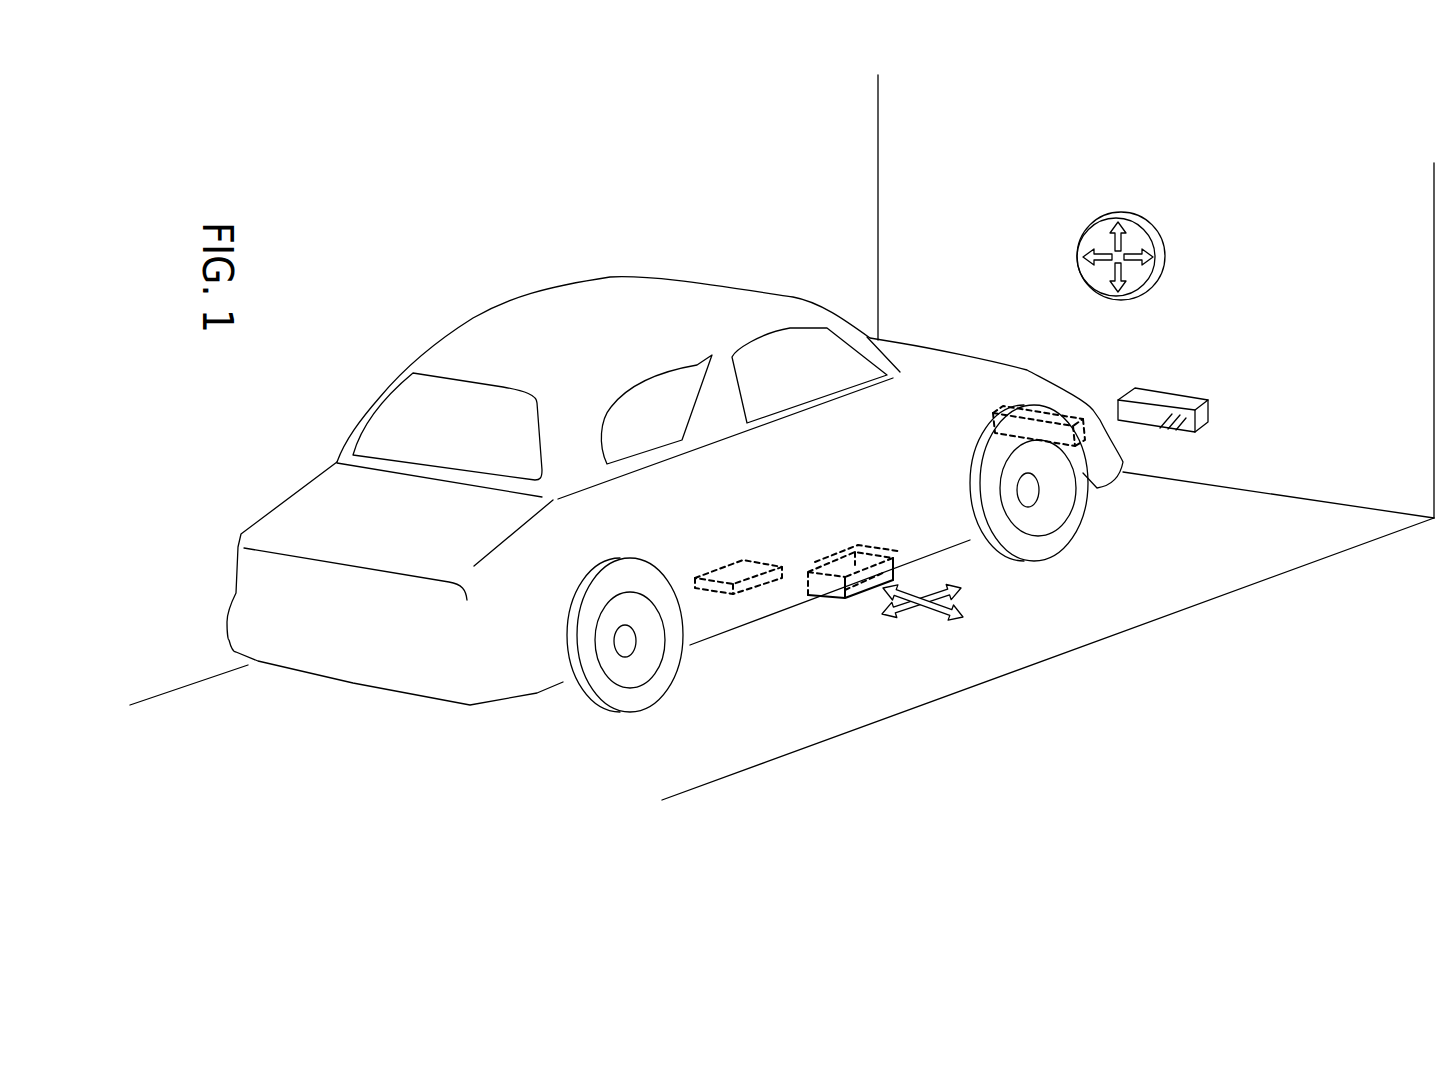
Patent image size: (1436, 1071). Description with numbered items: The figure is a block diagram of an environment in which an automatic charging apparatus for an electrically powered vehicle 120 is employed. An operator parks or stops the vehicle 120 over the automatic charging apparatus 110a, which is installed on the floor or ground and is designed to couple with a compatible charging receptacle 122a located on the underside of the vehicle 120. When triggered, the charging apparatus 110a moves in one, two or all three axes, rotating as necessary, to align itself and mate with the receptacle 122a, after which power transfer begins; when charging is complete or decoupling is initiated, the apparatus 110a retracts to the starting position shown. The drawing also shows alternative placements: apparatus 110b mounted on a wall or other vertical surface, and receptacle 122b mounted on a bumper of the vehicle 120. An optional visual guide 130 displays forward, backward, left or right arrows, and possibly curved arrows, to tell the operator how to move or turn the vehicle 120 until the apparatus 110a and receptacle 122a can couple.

The vehicle 120 is at (637, 297).
The visual guide 130 is at (1163, 268).
The automatic charging apparatus 110a is at (857, 597).
The automatic charging apparatus 110b is at (1173, 400).
The charging receptacle 122a is at (760, 580).
The charging receptacle 122b is at (1127, 453).